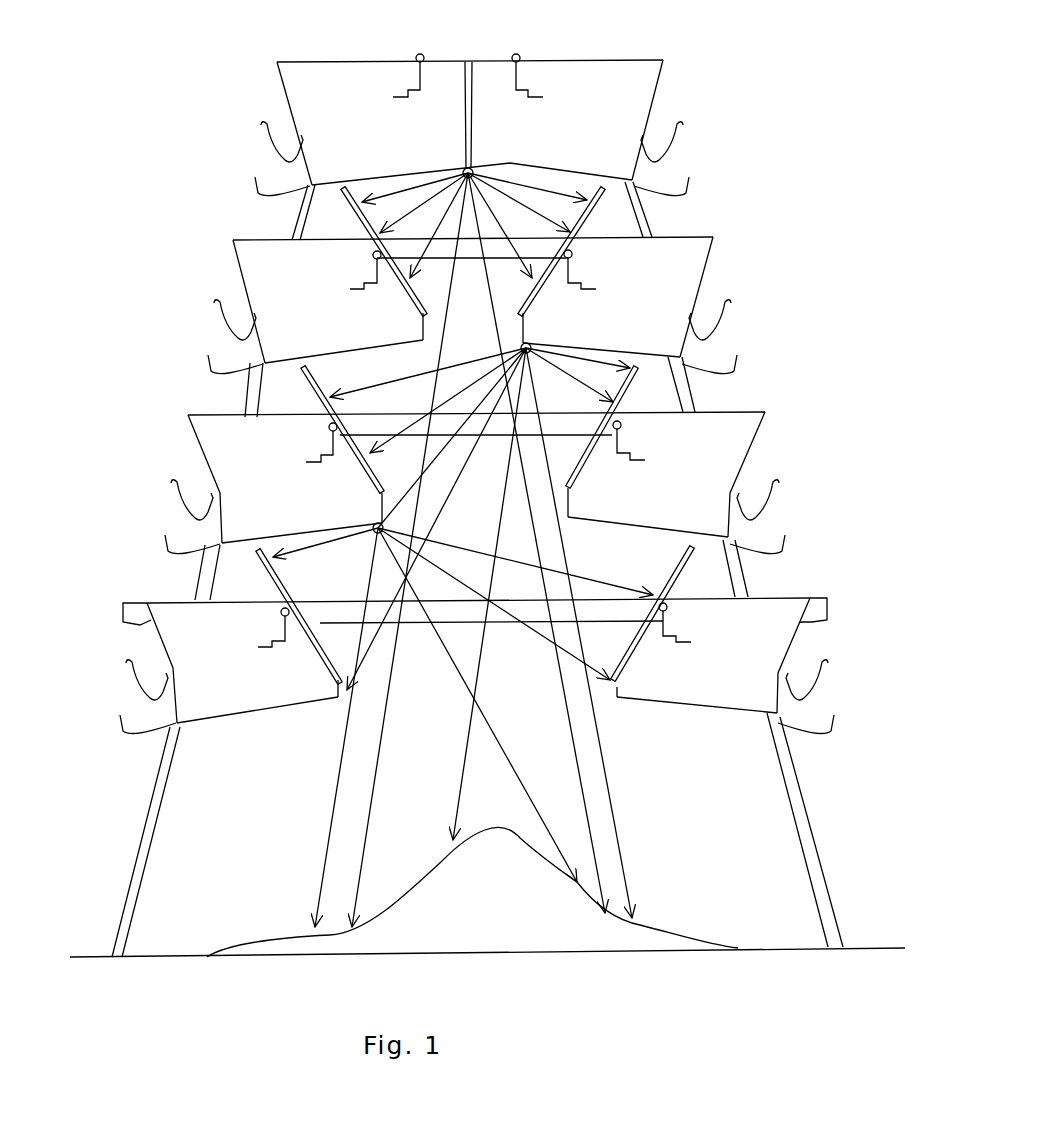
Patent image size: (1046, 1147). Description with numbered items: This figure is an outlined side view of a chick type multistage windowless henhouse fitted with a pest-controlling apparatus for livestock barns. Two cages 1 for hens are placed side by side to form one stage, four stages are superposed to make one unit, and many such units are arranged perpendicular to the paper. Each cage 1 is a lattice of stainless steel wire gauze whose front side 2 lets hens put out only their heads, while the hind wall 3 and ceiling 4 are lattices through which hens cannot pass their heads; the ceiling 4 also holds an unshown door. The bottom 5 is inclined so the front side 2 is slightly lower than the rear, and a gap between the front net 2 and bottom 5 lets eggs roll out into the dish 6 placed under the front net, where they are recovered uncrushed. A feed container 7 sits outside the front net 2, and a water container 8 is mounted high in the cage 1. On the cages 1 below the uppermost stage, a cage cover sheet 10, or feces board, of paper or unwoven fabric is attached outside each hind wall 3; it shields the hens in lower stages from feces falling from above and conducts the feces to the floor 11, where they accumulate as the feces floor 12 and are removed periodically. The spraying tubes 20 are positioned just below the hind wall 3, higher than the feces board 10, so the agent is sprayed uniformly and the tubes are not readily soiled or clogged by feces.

The cage 1 is at (285, 97).
The front side 2 is at (291, 113).
The hind wall 3 is at (462, 108).
The ceiling 4 is at (352, 55).
The bottom 5 is at (388, 176).
The dish 6 is at (258, 193).
The feed container 7 is at (275, 152).
The water container 8 is at (393, 97).
The cage cover sheet 10 is at (392, 236).
The floor 11 is at (762, 947).
The feces floor 12 is at (650, 917).
The spraying tube 20 is at (474, 168).